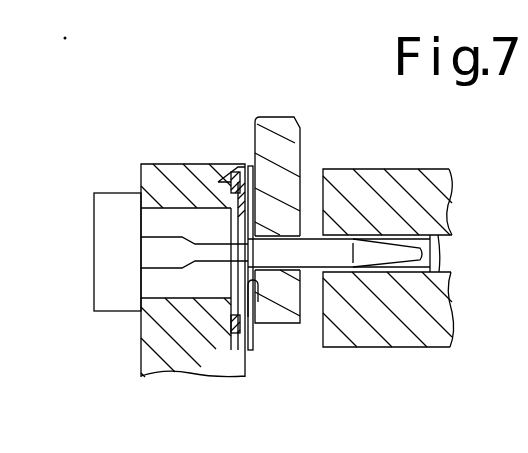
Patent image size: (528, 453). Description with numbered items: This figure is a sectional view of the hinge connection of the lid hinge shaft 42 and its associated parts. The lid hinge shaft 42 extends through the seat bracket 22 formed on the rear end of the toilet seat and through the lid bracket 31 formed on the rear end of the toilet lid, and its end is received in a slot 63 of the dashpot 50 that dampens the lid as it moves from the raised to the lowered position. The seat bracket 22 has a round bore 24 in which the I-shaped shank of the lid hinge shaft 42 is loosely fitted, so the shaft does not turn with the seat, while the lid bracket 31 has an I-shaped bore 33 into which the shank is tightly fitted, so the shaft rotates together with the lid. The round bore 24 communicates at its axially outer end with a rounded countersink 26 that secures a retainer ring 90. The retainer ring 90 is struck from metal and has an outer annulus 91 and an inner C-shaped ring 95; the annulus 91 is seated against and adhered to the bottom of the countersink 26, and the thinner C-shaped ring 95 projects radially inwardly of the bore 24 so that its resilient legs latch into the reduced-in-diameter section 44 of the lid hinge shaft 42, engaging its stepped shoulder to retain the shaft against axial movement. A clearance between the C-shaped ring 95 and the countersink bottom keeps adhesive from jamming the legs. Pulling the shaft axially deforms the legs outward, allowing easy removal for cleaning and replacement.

The seat bracket 22 is at (160, 355).
The round bore 24 is at (216, 218).
The countersink 26 is at (222, 300).
The lid bracket 31 is at (290, 127).
The I-shaped bore 33 is at (287, 270).
The lid hinge shaft 42 is at (112, 193).
The reduced-in-diameter section 44 is at (213, 220).
The dashpot 50 is at (386, 350).
The slot 63 is at (400, 235).
The retainer ring 90 is at (236, 355).
The outer annulus 91 is at (244, 166).
The C-shaped ring 95 is at (253, 297).